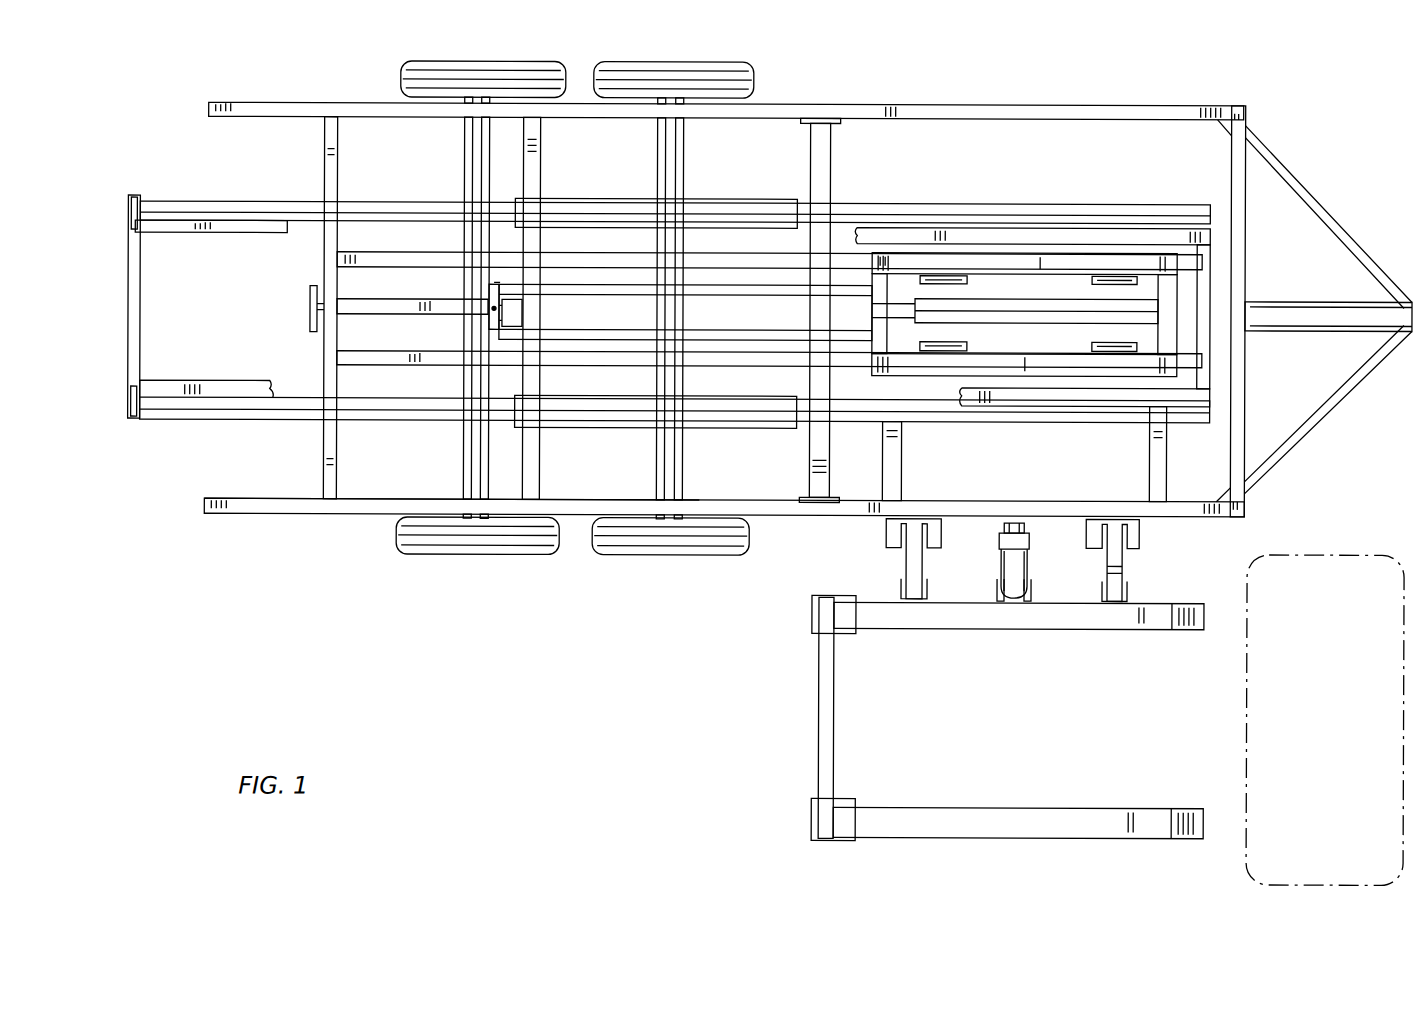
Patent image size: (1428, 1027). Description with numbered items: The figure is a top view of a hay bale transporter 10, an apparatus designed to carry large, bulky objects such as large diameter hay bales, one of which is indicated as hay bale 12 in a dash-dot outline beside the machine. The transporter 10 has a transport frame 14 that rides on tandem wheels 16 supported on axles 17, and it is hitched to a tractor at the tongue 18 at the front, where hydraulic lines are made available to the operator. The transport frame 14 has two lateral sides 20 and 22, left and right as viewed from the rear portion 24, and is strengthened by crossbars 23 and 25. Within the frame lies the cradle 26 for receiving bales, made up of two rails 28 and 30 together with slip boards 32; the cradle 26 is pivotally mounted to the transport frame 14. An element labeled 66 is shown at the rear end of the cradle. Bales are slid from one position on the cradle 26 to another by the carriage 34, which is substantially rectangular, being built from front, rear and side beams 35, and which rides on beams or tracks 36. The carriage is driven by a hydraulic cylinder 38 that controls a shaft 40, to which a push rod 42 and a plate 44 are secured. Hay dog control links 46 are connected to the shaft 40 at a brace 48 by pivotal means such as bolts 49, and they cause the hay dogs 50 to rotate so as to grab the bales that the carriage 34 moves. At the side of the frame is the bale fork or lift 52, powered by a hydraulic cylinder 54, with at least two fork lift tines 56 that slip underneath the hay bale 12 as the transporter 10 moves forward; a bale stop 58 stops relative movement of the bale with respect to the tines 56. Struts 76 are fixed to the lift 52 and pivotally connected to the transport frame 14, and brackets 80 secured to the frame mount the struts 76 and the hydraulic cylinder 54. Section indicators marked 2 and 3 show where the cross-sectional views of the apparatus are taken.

The section line 2- 2 is at (111, 305).
The section line 3- 3 is at (1055, 57).
The hay bale transporter 10 is at (270, 575).
The hay bale 12 is at (1334, 558).
The transport frame 14 is at (355, 516).
The tandem wheels 16 is at (510, 548).
The axles 17 is at (690, 162).
The tongue 18 is at (1380, 326).
The lateral side 20 is at (876, 104).
The lateral side 22 is at (783, 516).
The crossbar 23 is at (540, 470).
The rear portion 24 is at (324, 156).
The crossbar 25 is at (808, 455).
The cradle 26 is at (950, 222).
The rail 28 is at (400, 421).
The rail 30 is at (380, 203).
The slip boards 32 is at (245, 236).
The carriage 34 is at (1108, 376).
The beams 35 is at (1150, 262).
The tracks 36 is at (352, 358).
The hydraulic cylinder 38 is at (740, 322).
The shaft 40 is at (500, 330).
The push rod 42 is at (357, 306).
The plate 44 is at (310, 308).
The hay dog control links 46 is at (607, 330).
The brace 48 is at (490, 326).
The bolts 49 is at (498, 283).
The hay dogs 50 is at (960, 278).
The bale fork or lift 52 is at (868, 822).
The hydraulic cylinder 54 is at (1012, 600).
The fork lift tines 56 is at (1078, 620).
The bale stop 58 is at (820, 668).
The end cap 66 is at (129, 352).
The struts 76 is at (1123, 570).
The brackets 80 is at (1028, 532).